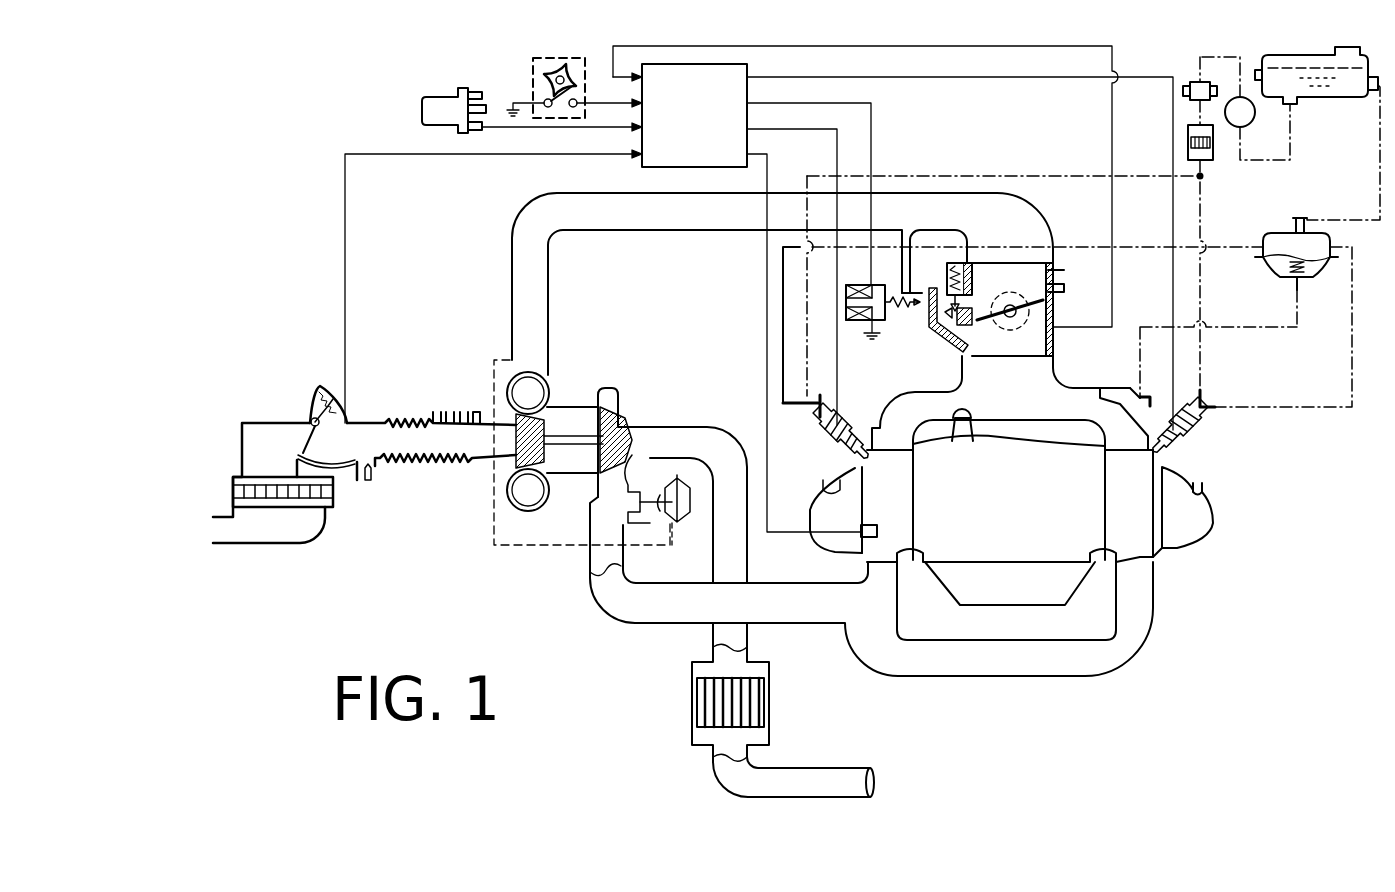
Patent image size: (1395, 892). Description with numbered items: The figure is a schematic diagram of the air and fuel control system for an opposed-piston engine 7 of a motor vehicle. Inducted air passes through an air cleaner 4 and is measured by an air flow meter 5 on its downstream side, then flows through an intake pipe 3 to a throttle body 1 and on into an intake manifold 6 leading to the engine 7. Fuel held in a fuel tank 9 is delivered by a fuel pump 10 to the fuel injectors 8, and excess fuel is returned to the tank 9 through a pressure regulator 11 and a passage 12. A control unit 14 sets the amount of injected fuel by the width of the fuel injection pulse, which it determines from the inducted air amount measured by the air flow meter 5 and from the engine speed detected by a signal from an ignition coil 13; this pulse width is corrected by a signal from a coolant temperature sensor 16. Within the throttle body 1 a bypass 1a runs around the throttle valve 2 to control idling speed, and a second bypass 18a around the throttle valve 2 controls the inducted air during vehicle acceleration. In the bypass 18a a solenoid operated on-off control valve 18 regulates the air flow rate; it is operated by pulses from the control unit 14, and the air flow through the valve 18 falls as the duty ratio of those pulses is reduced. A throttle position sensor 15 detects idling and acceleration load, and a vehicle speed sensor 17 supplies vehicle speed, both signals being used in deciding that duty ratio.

The throttle body 1 is at (1057, 320).
The bypass 1a is at (957, 330).
The throttle valve 2 is at (1000, 325).
The intake pipe 3 is at (540, 332).
The air cleaner 4 is at (292, 545).
The air flow meter 5 is at (347, 468).
The intake manifold 6 is at (1060, 404).
The opposed-piston engine 7 is at (1016, 505).
The fuel injectors 8 is at (834, 438).
The fuel tank 9 is at (1322, 97).
The fuel pump 10 is at (1247, 124).
The pressure regulator 11 is at (1275, 270).
The passage 12 is at (1379, 188).
The ignition coil 13 is at (440, 97).
The control unit 14 is at (666, 160).
The throttle position sensor 15 is at (1000, 303).
The coolant temperature sensor 16 is at (878, 532).
The vehicle speed sensor 17 is at (533, 84).
The solenoid operated on-off control valve 18 is at (858, 322).
The bypass 18a is at (915, 350).